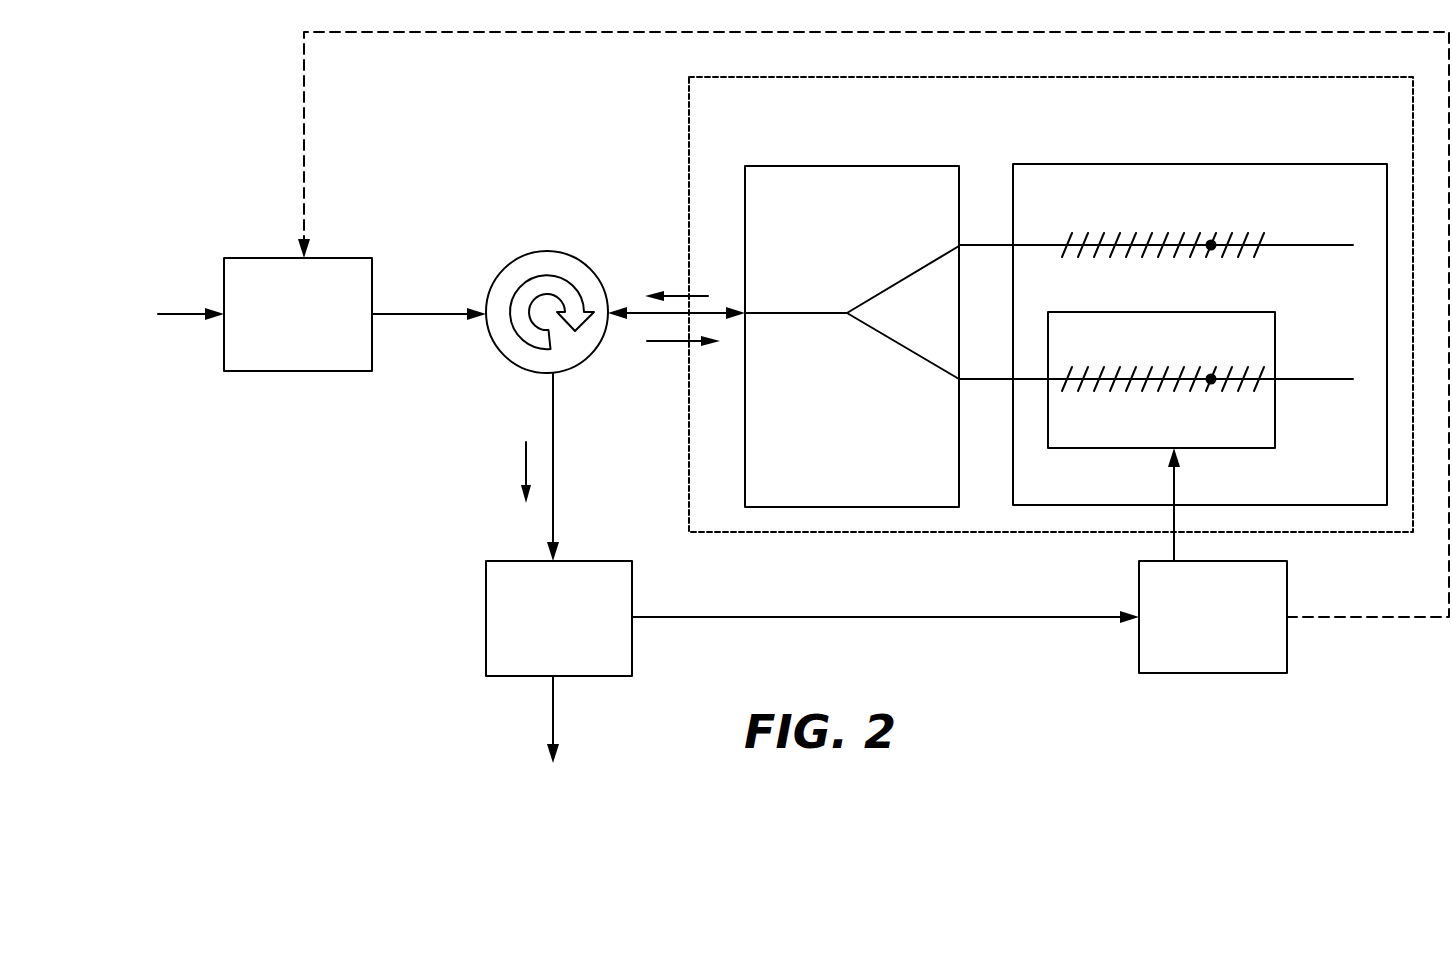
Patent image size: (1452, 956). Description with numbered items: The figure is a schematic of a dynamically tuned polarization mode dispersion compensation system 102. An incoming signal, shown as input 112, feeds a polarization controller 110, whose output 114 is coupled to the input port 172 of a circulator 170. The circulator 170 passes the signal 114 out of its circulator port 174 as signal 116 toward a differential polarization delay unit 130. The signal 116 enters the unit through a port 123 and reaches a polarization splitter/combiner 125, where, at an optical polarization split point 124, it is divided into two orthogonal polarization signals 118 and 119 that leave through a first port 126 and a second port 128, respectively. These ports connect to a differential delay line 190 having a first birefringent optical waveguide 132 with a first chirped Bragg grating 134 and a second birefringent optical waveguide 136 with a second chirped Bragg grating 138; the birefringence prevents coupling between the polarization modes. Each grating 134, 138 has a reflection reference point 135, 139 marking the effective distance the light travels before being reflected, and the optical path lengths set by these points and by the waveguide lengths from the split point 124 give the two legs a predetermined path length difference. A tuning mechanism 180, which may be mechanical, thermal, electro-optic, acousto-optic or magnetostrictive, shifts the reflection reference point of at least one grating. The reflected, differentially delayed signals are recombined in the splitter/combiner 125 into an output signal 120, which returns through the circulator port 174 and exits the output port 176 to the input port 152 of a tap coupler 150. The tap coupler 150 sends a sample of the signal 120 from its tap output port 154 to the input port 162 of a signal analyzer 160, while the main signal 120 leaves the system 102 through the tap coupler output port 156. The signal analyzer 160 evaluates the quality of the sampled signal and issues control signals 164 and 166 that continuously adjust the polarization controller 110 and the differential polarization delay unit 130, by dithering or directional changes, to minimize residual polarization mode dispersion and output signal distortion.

The polarization mode dispersion compensation system 102 is at (345, 527).
The polarization controller 110 is at (280, 328).
The source input 112 is at (177, 313).
The output of the polarization controller 114 is at (373, 310).
The signal 116 is at (643, 320).
The first polarization signal 118 is at (985, 243).
The second polarization signal 119 is at (985, 378).
The output signal 120 is at (680, 296).
The port 123 is at (744, 312).
The optical polarization split point 124 is at (845, 310).
The polarization splitter/combiner 125 is at (836, 427).
The first port 126 is at (958, 246).
The second port 128 is at (957, 382).
The differential polarization delay unit 130 is at (1020, 128).
The first optical waveguide 132 is at (1303, 247).
The first chirped Bragg grating 134 is at (1090, 242).
The reflection reference point 135 is at (1212, 243).
The second optical waveguide 136 is at (1303, 381).
The second chirped Bragg grating 138 is at (1091, 376).
The reflection reference point 139 is at (1212, 377).
The tap coupler 150 is at (540, 636).
The input port of the tap coupler 152 is at (556, 561).
The tap output port 154 is at (633, 620).
The tap coupler output port 156 is at (554, 678).
The signal analyzer 160 is at (1196, 629).
The input port of the signal analyzer 162 is at (1139, 622).
The control signal 164 is at (1288, 618).
The control signal 166 is at (1174, 560).
The circulator 170 is at (547, 252).
The input port 172 is at (487, 304).
The circulator port 174 is at (610, 311).
The output port 176 is at (555, 375).
The tuning mechanism 180 is at (1213, 441).
The differential delay line 190 is at (1285, 189).